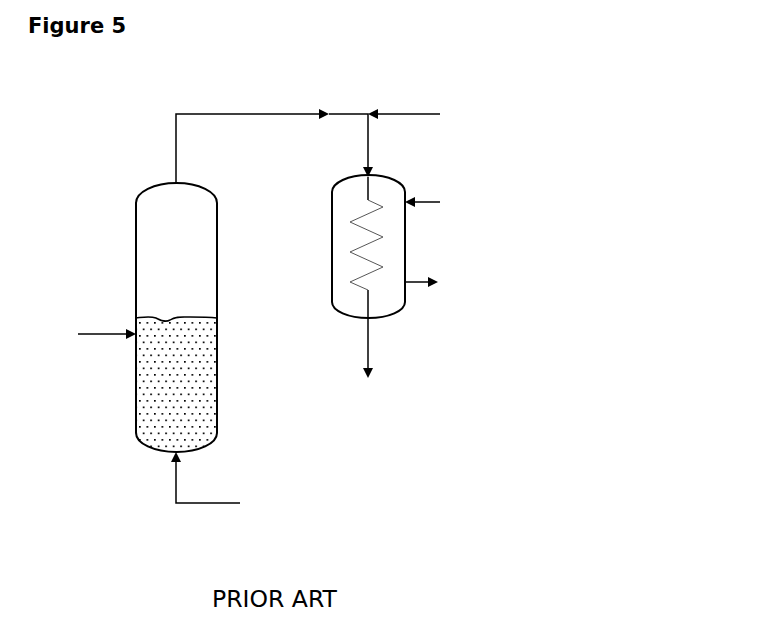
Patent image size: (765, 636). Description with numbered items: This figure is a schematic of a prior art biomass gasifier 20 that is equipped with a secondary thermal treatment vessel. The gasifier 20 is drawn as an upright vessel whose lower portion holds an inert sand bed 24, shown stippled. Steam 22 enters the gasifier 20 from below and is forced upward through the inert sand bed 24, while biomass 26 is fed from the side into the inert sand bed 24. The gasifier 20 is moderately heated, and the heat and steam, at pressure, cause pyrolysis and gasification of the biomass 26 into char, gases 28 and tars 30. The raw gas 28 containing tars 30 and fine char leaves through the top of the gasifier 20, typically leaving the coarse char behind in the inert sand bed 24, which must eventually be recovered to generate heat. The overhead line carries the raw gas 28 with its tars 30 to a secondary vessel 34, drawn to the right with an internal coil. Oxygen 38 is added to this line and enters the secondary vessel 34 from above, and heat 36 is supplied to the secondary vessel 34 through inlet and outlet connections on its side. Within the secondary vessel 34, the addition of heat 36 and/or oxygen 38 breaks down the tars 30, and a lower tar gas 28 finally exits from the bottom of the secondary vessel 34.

The gasifier 20 is at (222, 237).
The steam 22 is at (223, 484).
The inert sand bed 24 is at (158, 429).
The biomass 26 is at (90, 336).
The raw gas 28 is at (312, 255).
The tars 30 is at (252, 146).
The secondary vessel 34 is at (326, 192).
The heat 36 is at (449, 244).
The oxygen 38 is at (431, 116).